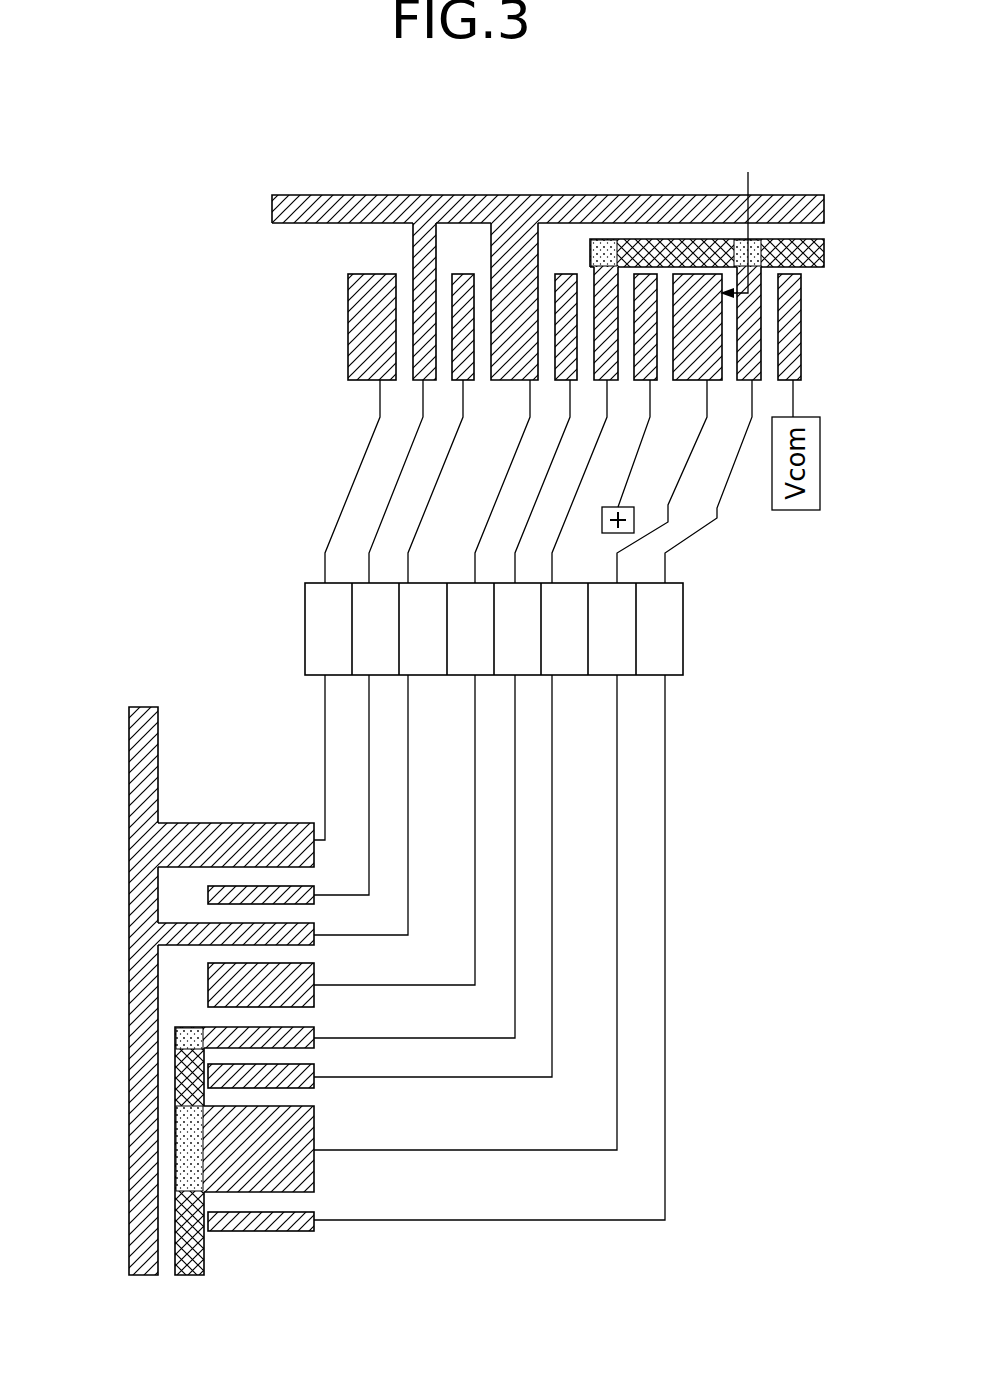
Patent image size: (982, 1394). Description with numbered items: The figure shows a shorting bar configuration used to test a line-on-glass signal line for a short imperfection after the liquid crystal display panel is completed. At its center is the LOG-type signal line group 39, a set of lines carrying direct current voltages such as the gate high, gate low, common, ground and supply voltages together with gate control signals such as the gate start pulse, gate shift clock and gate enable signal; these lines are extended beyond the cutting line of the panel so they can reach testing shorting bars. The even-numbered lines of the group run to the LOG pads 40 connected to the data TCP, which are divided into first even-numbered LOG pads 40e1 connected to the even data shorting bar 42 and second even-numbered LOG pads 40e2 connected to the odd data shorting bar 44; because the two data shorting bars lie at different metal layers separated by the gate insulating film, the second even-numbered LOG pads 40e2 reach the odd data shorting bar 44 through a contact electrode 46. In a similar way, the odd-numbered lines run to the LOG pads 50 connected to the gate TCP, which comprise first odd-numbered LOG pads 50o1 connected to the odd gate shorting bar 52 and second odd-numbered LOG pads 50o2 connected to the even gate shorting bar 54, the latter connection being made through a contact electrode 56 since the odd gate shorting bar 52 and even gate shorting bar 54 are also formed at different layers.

The LOG-type signal line group 39 is at (700, 721).
The LOG pads 40 is at (324, 331).
The first even-numbered LOG pads 40e1 is at (517, 228).
The second even-numbered LOG pads 40e2 is at (755, 327).
The even data shorting bar 42 is at (690, 212).
The odd data shorting bar 44 is at (637, 250).
The contact electrode 46 is at (602, 250).
The LOG pads 50 is at (226, 795).
The first odd-numbered LOG pads 50o1 is at (203, 845).
The second odd-numbered LOG pads 50o2 is at (212, 1140).
The odd gate shorting bar 52 is at (135, 752).
The even gate shorting bar 54 is at (197, 1262).
The contact electrode 56 is at (183, 1040).